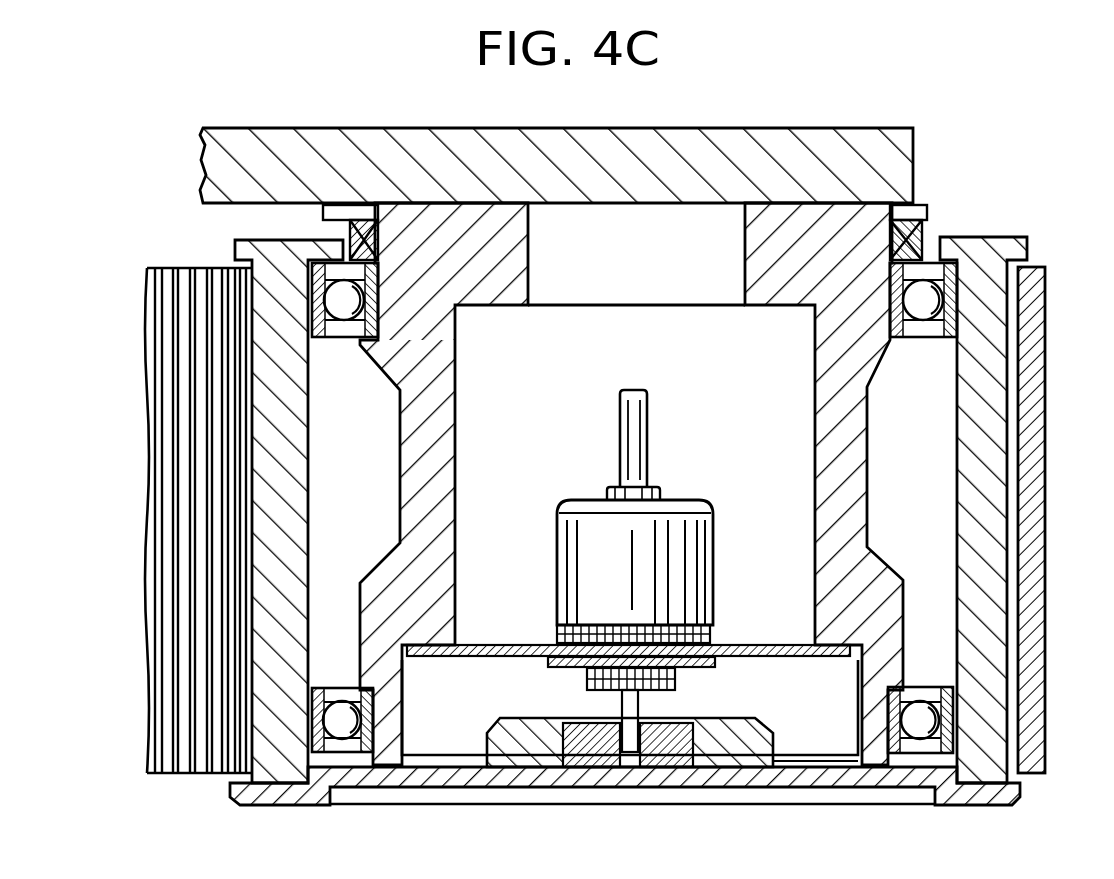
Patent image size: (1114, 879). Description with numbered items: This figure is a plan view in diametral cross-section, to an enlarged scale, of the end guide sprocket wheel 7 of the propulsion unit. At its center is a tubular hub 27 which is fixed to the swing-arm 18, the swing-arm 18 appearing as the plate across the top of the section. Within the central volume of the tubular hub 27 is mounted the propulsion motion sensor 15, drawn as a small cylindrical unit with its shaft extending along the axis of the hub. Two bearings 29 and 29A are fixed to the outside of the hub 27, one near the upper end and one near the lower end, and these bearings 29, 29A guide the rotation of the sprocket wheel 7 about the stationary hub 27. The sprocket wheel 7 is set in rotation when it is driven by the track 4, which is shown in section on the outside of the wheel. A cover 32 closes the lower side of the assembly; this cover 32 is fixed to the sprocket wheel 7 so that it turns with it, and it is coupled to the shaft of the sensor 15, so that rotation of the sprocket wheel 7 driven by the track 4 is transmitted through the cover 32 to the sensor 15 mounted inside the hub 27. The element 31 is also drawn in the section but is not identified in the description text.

The swing-arm 18 is at (292, 152).
The end guide sprocket wheel 7 is at (982, 193).
The tubular hub 27 is at (470, 250).
The housing 31 is at (987, 367).
The track 4 is at (203, 489).
The bearing 29A is at (330, 300).
The bearing 29 is at (333, 717).
The propulsion motion sensor 15 is at (592, 551).
The cover 32 is at (770, 776).